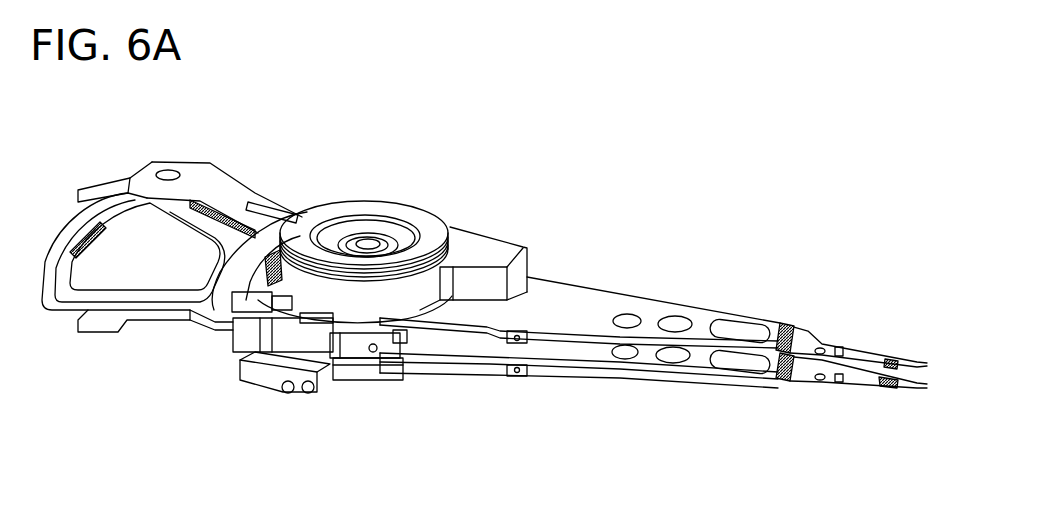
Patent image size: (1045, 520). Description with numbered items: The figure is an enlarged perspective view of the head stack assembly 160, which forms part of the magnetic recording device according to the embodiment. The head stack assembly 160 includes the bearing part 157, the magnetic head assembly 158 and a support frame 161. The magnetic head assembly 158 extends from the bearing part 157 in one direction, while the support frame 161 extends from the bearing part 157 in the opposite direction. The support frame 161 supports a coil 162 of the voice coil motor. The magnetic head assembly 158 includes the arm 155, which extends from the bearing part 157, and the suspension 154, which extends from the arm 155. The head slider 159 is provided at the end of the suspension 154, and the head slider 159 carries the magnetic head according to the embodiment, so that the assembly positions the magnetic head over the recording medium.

The suspension 154 is at (857, 352).
The arm 155 is at (700, 327).
The bearing part 157 is at (387, 176).
The magnetic head assembly 158 is at (628, 281).
The head slider 159 is at (893, 360).
The head stack assembly 160 is at (588, 202).
The support frame 161 is at (203, 183).
The coil 162 is at (137, 285).